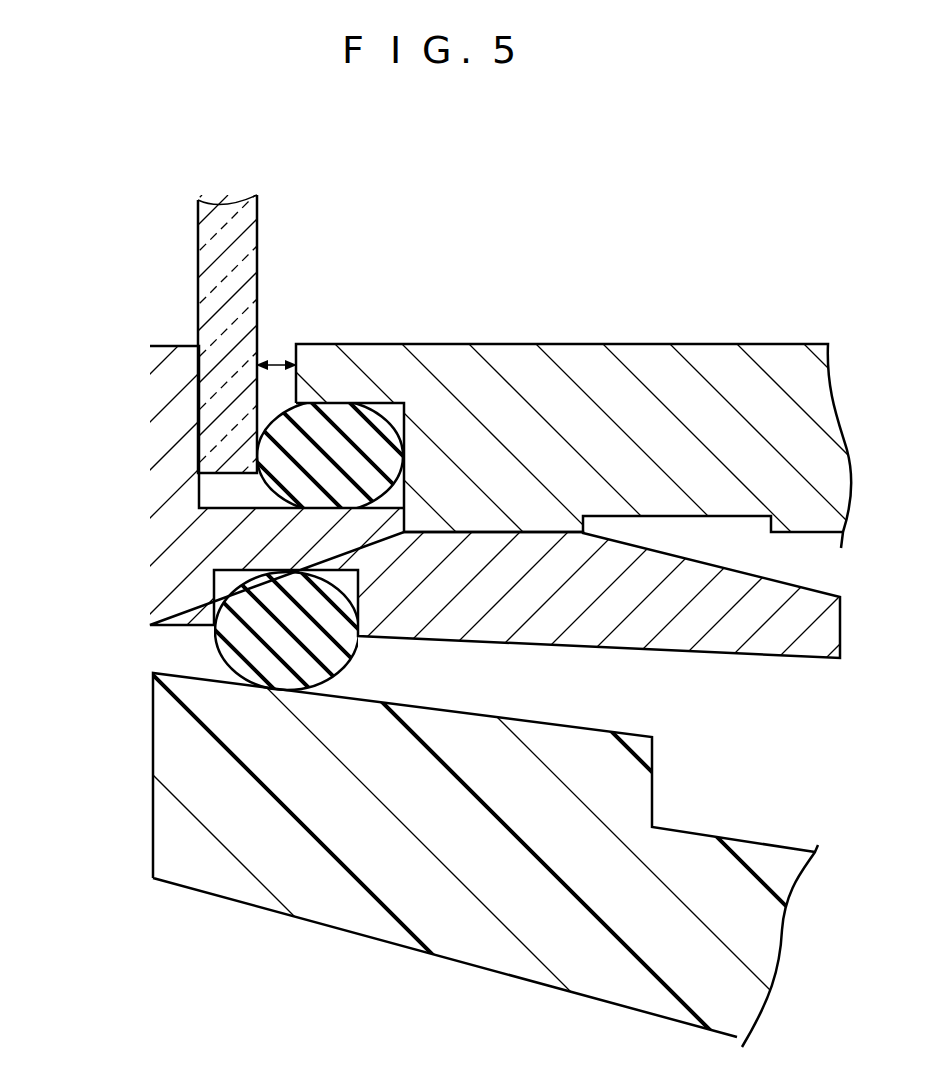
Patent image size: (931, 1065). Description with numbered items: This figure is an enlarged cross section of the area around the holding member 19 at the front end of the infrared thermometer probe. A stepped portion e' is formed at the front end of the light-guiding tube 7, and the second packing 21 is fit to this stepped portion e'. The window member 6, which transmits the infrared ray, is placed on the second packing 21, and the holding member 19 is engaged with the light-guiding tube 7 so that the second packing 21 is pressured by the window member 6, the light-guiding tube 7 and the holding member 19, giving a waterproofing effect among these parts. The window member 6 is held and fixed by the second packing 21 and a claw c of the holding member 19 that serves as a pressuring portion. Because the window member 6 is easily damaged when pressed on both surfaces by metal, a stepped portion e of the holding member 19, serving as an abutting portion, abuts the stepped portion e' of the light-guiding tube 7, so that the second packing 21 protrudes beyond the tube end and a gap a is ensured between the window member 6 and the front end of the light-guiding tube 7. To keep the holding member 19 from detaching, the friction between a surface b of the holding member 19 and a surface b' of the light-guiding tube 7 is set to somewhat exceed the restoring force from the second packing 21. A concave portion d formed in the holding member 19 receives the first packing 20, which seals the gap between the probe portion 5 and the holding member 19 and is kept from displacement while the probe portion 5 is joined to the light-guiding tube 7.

The probe portion 5 is at (360, 902).
The window member 6 is at (212, 250).
The light-guiding tube 7 is at (753, 371).
The holding member 19 is at (163, 492).
The first packing 20 is at (238, 645).
The second packing 21 is at (364, 430).
The gap a is at (277, 361).
The surface b is at (579, 623).
The surface b' is at (533, 392).
The claw c is at (148, 374).
The concave portion d is at (367, 571).
The stepped portion e is at (238, 562).
The stepped portion e' is at (449, 373).